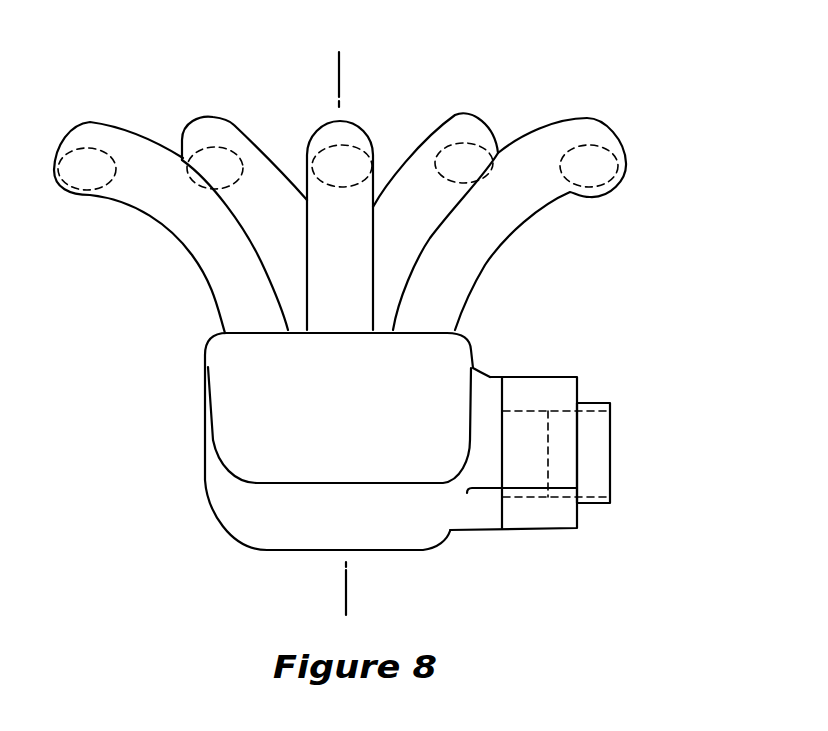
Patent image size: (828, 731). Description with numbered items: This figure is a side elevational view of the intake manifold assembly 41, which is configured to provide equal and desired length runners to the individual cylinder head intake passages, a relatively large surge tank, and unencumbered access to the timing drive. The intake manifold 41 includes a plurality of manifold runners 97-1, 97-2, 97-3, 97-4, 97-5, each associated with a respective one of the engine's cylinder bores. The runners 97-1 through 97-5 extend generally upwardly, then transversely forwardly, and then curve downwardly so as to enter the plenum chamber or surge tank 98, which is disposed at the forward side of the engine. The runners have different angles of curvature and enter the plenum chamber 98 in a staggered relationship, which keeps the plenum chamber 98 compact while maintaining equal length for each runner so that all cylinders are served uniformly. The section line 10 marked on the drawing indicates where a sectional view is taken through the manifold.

The intake manifold assembly 41 is at (557, 63).
The manifold runner 97-1 is at (103, 132).
The manifold runner 97-2 is at (230, 133).
The manifold runner 97-3 is at (357, 133).
The manifold runner 97-4 is at (478, 137).
The manifold runner 97-5 is at (493, 235).
The plenum chamber 98 is at (440, 550).
The section line 10- 10 is at (328, 60).